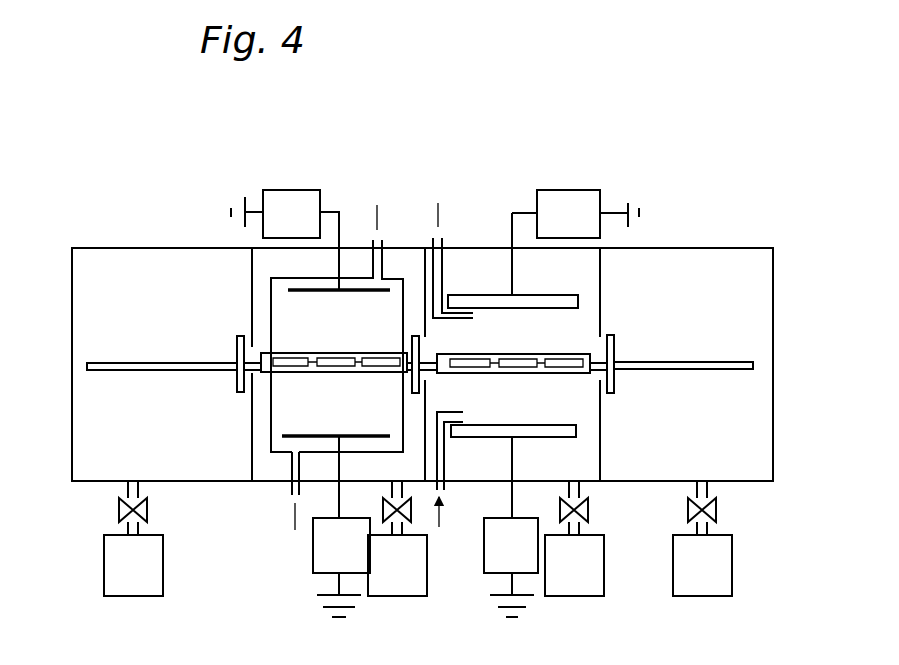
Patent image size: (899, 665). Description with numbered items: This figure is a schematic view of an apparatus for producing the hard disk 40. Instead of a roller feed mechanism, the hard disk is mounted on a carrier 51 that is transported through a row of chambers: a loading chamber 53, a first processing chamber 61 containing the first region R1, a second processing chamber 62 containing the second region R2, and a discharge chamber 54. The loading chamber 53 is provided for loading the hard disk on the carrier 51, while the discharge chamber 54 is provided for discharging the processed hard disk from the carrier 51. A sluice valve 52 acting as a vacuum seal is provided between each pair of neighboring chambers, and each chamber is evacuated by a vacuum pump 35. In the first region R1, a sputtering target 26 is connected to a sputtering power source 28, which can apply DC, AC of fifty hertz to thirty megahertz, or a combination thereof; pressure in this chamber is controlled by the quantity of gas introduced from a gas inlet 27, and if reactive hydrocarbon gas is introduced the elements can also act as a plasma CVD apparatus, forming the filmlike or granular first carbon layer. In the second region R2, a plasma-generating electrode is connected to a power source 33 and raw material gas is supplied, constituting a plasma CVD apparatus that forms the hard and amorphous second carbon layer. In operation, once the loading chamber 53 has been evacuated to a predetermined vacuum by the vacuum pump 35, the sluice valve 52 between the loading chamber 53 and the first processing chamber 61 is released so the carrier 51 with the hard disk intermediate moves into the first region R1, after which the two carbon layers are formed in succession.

The sputtering target 26 is at (530, 295).
The gas inlet 27 is at (447, 367).
The sputtering power source 28 is at (582, 227).
The power source 33 is at (306, 227).
The vacuum pump 35 is at (148, 579).
The hard disk 40 is at (341, 367).
The carrier 51 is at (353, 343).
The sluice valve 52 is at (237, 376).
The loading chamber 53 is at (762, 420).
The discharge chamber 54 is at (83, 421).
The first processing chamber 61 is at (582, 453).
The second processing chamber 62 is at (268, 462).
The first region R1 is at (480, 273).
The second region R2 is at (402, 268).